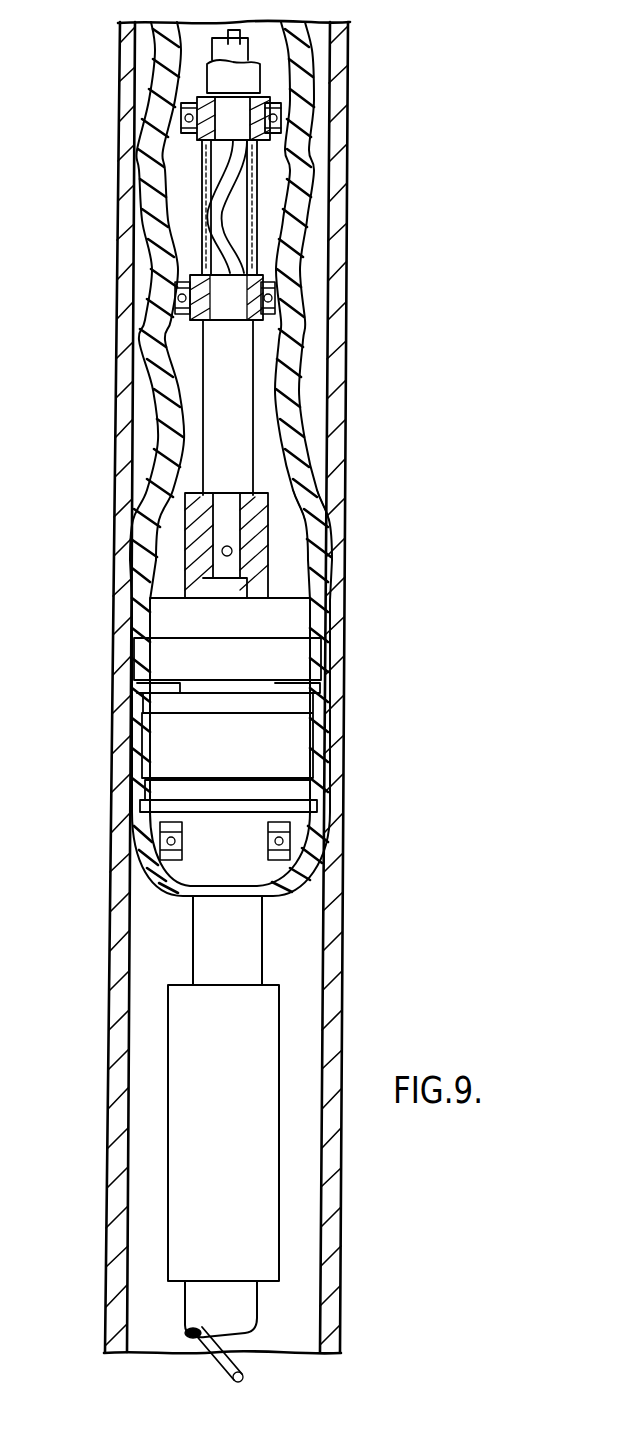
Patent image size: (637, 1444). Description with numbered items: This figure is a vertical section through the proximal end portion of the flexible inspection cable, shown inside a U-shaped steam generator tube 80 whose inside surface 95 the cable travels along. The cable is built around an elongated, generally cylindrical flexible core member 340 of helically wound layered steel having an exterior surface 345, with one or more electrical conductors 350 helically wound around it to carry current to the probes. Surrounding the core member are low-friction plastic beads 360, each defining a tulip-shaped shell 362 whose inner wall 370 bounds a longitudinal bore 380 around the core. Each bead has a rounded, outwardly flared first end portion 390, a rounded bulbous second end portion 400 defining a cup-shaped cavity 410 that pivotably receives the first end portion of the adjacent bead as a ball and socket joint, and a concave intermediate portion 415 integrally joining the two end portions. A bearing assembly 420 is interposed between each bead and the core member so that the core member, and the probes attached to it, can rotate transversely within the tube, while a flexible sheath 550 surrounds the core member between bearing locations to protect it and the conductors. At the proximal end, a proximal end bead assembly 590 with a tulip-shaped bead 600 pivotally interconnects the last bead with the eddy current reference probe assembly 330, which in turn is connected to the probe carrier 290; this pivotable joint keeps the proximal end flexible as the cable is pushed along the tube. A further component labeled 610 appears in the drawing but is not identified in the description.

The steam generator tube 80 is at (340, 118).
The inside surface 95 is at (325, 78).
The concave intermediate portion 415 is at (152, 248).
The bearing assembly 420 is at (177, 300).
The proximal end bead assembly 590 is at (135, 822).
The bead 360 is at (302, 350).
The tulip-shaped shell 362 is at (313, 372).
The cup-shaped cavity 410 is at (300, 250).
The tulip-shaped bead 600 is at (333, 470).
The flexible sheath 550 is at (212, 76).
The core member 340 is at (250, 155).
The exterior surface 345 is at (257, 180).
The second end portion 400 is at (262, 230).
The first end portion 390 is at (285, 270).
The inner wall 370 is at (282, 298).
The longitudinal bore 380 is at (275, 318).
The eddy current reference probe assembly 330 is at (262, 733).
The lower bearing 610 is at (325, 848).
The probe carrier 290 is at (237, 1305).
The electrical conductors 350 is at (240, 1368).